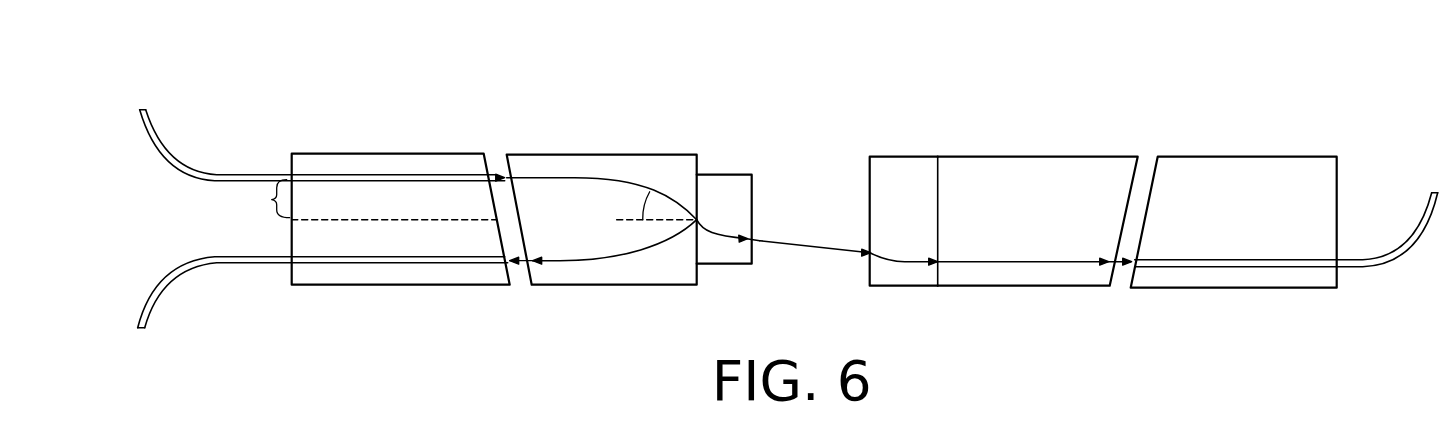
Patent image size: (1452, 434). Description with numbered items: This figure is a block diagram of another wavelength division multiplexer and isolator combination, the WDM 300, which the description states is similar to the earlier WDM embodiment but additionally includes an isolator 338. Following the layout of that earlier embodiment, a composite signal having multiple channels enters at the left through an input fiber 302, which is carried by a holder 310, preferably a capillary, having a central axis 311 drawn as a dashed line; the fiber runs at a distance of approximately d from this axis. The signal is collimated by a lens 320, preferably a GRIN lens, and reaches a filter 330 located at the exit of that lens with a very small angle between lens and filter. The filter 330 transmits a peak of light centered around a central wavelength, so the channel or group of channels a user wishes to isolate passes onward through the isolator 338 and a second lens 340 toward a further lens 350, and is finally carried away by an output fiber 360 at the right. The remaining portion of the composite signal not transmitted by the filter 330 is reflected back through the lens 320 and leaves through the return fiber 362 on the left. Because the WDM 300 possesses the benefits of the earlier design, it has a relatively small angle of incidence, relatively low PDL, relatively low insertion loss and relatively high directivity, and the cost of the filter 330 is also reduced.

The WDM 300 is at (836, 63).
The fiber 302 is at (158, 136).
The holder 310 is at (375, 154).
The axis 311 is at (292, 222).
The lens 320 is at (592, 155).
The filter 330 is at (722, 175).
The isolator 338 is at (906, 157).
The second lens 340 is at (1020, 157).
The lens 350 is at (1246, 157).
The fiber 360 is at (1410, 250).
The fiber 362 is at (160, 297).